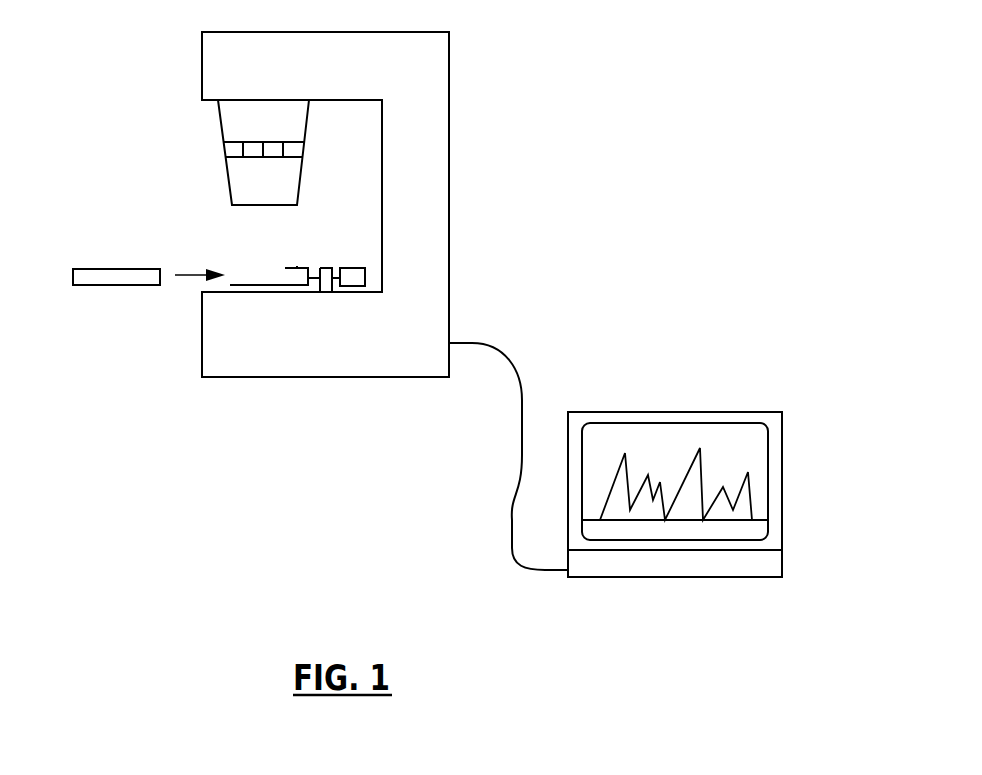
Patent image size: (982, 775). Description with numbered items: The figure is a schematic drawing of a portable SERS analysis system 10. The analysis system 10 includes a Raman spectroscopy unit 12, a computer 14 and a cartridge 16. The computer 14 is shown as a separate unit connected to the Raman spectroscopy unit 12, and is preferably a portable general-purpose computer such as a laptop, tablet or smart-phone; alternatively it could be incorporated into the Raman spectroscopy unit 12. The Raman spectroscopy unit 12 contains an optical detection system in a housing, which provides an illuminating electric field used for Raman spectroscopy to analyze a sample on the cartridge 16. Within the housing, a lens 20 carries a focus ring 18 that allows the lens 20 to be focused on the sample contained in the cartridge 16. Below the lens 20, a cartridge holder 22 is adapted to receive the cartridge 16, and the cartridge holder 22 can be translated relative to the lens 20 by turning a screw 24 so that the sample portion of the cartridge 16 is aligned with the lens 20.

The analysis system 10 is at (131, 434).
The Raman spectroscopy unit 12 is at (449, 147).
The computer 14 is at (782, 462).
The cartridge 16 is at (95, 285).
The focus ring 18 is at (222, 148).
The lens 20 is at (225, 185).
The cartridge holder 22 is at (297, 266).
The screw 24 is at (353, 286).